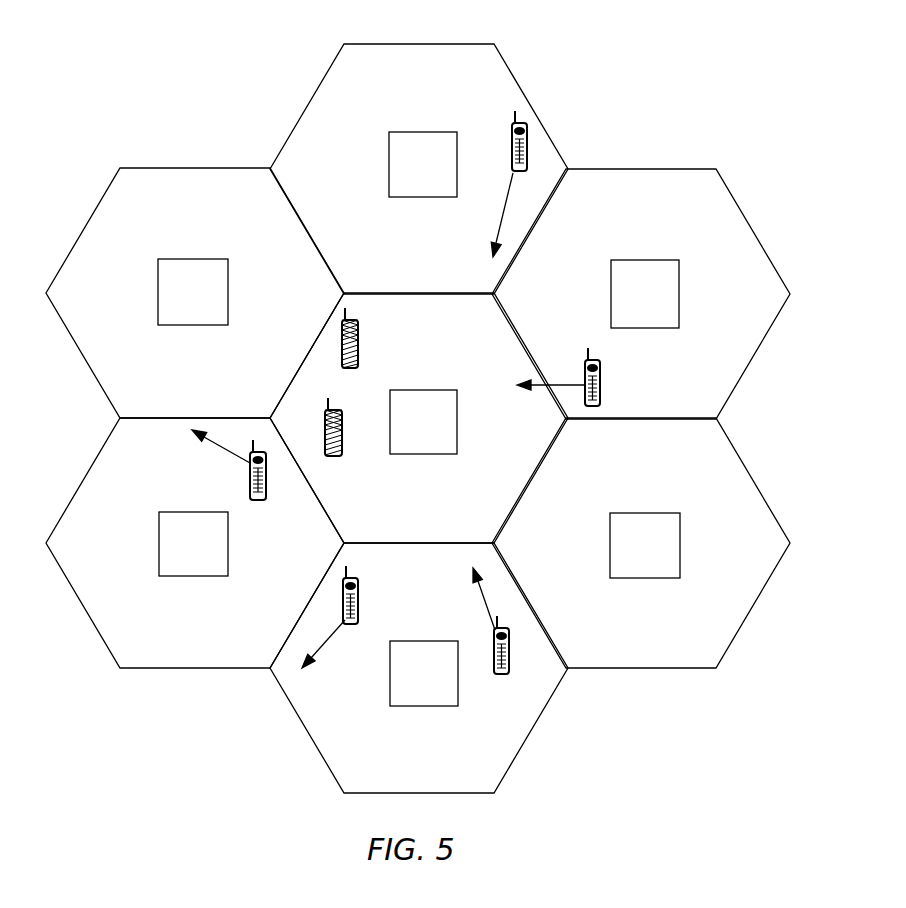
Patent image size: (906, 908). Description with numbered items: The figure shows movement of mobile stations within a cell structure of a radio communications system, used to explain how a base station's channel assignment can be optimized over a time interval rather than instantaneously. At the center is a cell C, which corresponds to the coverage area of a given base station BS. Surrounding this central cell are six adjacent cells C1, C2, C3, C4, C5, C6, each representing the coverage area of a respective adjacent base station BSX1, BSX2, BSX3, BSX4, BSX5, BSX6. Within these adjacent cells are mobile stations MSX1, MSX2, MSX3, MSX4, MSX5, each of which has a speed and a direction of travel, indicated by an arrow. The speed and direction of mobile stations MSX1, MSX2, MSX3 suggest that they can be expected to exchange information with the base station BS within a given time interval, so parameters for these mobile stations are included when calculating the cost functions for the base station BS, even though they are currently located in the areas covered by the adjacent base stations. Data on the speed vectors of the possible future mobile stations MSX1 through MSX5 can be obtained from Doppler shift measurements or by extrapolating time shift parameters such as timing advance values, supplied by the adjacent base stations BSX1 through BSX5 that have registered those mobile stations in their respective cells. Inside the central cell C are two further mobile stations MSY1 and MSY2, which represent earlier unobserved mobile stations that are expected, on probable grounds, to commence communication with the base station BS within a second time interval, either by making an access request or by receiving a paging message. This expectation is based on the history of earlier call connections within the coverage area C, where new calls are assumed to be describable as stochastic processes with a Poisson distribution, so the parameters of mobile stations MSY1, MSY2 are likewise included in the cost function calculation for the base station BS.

The cell C is at (419, 418).
The adjacent cell C1 is at (312, 97).
The adjacent cell C2 is at (699, 172).
The adjacent cell C3 is at (702, 667).
The adjacent cell C4 is at (522, 747).
The adjacent cell C5 is at (135, 667).
The adjacent cell C6 is at (137, 168).
The base station BS is at (423, 422).
The adjacent base station BSX1 is at (423, 164).
The adjacent base station BSX2 is at (645, 294).
The adjacent base station BSX3 is at (645, 545).
The adjacent base station BSX4 is at (424, 673).
The adjacent base station BSX5 is at (193, 544).
The adjacent base station BSX6 is at (193, 292).
The mobile station MSX1 is at (471, 176).
The mobile station MSX2 is at (556, 376).
The mobile station MSX3 is at (466, 628).
The mobile station MSX4 is at (357, 635).
The mobile station MSX5 is at (211, 480).
The mobile station MSY1 is at (339, 441).
The mobile station MSY2 is at (378, 334).